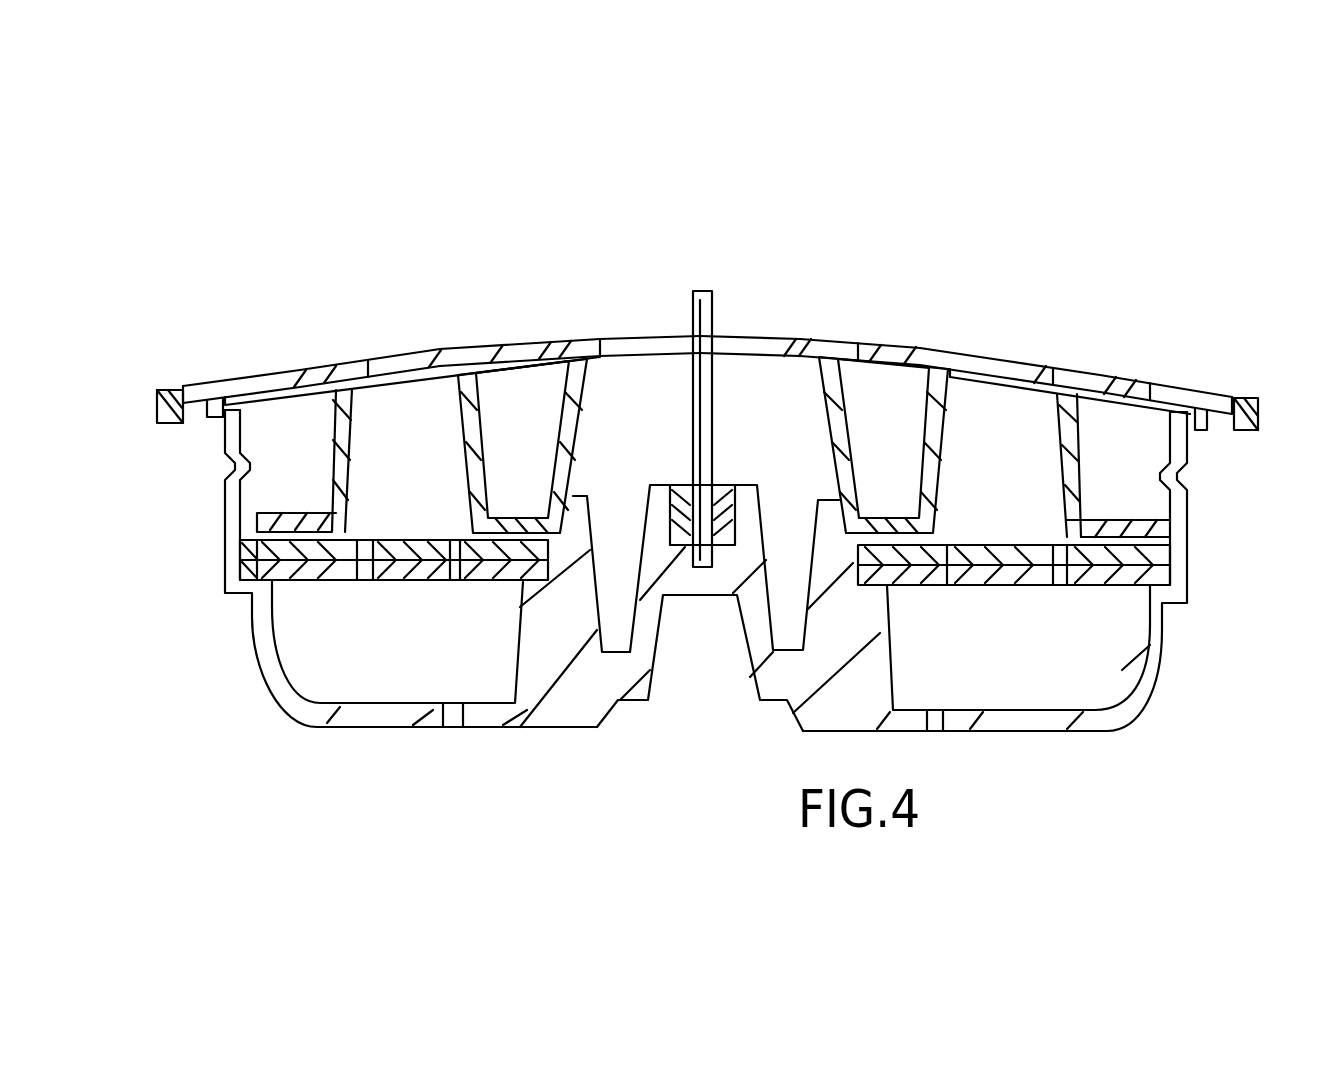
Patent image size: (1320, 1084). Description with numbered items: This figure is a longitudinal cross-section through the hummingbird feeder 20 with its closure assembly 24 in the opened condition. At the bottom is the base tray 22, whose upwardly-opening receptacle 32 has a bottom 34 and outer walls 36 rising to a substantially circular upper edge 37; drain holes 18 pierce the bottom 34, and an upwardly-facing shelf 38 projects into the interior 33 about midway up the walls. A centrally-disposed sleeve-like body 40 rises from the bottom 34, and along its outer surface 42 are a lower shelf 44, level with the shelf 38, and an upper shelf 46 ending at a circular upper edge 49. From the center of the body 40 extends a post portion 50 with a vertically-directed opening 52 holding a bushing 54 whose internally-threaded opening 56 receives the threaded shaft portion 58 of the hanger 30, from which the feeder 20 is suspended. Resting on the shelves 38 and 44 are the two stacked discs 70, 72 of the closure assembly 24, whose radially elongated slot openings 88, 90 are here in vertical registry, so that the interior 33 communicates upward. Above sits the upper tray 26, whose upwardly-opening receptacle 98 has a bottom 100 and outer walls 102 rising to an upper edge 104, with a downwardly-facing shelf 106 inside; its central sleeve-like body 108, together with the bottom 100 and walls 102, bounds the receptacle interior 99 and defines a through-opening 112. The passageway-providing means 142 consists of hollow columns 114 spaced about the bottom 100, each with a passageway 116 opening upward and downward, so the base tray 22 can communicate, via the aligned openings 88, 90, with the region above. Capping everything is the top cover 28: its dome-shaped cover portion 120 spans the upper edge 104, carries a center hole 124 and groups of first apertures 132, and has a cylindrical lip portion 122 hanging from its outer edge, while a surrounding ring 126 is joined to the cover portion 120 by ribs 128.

The drain holes 18 is at (450, 728).
The hummingbird feeder 20 is at (1025, 268).
The base tray 22 is at (280, 663).
The closure assembly 24 is at (1207, 614).
The upper tray 26 is at (220, 450).
The top cover 28 is at (887, 343).
The hanger 30 is at (690, 316).
The upwardly-opening receptacle 32 is at (1160, 653).
The interior of the base tray 33 is at (1036, 646).
The bottom 34 is at (367, 733).
The outer walls 36 is at (253, 643).
The upper edge 37 is at (1190, 488).
The upwardly-facing shelf 38 is at (268, 572).
The sleeve-like body 40 is at (513, 673).
The outer surface 42 is at (890, 654).
The lower shelf 44 is at (520, 582).
The upper shelf 46 is at (533, 517).
The upper edge 49 is at (827, 493).
The post portion 50 is at (768, 653).
The vertically-directed opening 52 is at (733, 527).
The bushing 54 is at (663, 482).
The internally-threaded opening 56 is at (710, 470).
The shaft portion 58 is at (692, 390).
The disc 70 is at (240, 567).
The disc 72 is at (240, 551).
The openings 88 is at (373, 582).
The openings 90 is at (370, 547).
The upwardly-opening receptacle 98 is at (225, 420).
The receptacle interior 99 is at (271, 438).
The bottom 100 is at (512, 517).
The outer walls 102 is at (1200, 458).
The upper edge 104 is at (1200, 410).
The downwardly-facing shelf 106 is at (1190, 497).
The sleeve-like body 108 is at (860, 343).
The through-opening 112 is at (822, 345).
The hollow columns 114 is at (337, 437).
The passageway 116 is at (363, 407).
The cover portion 120 is at (342, 390).
The lip portion 122 is at (1218, 412).
The center hole 124 is at (628, 339).
The ring 126 is at (172, 388).
The ribs 128 is at (192, 384).
The first apertures 132 is at (453, 362).
The passageway-providing means 142 is at (928, 243).